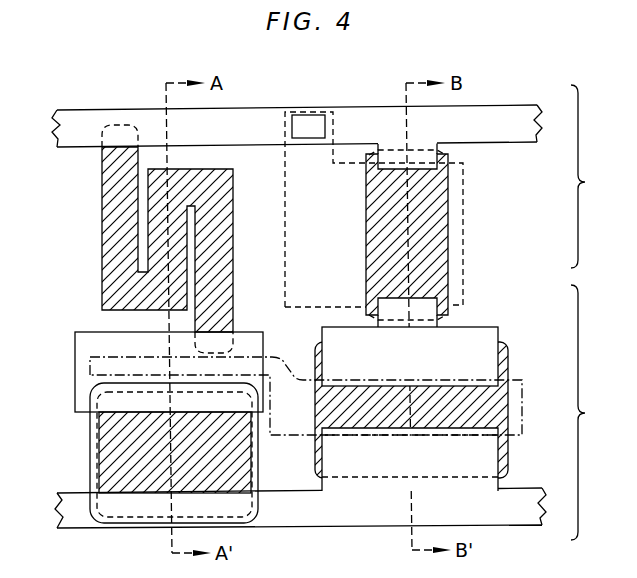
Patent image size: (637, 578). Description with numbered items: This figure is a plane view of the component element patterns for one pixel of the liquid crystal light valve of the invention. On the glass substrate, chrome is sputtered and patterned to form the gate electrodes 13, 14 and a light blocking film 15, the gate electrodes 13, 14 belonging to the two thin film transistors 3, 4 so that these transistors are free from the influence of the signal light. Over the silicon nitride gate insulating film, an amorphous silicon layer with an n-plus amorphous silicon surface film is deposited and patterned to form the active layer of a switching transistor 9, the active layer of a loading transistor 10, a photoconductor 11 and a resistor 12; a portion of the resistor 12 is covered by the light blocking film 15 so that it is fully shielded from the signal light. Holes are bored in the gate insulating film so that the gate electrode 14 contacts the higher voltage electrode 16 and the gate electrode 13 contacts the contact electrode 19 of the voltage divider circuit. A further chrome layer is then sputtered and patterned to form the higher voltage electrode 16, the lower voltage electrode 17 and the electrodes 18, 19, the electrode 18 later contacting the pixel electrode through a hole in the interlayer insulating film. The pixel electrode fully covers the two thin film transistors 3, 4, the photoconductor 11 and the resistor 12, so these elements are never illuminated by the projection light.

The thin film transistor 3 is at (585, 176).
The thin film transistor 4 is at (586, 412).
The switching transistor 9 is at (505, 341).
The loading transistor 10 is at (448, 185).
The photoconductor 11 is at (102, 225).
The resistor 12 is at (99, 432).
The gate electrode 13 is at (517, 397).
The gate electrode 14 is at (463, 213).
The light blocking film 15 is at (90, 471).
The higher voltage electrode 16 is at (478, 109).
The lower voltage electrode 17 is at (492, 527).
The electrode 18 is at (488, 327).
The contact electrode 19 is at (75, 332).